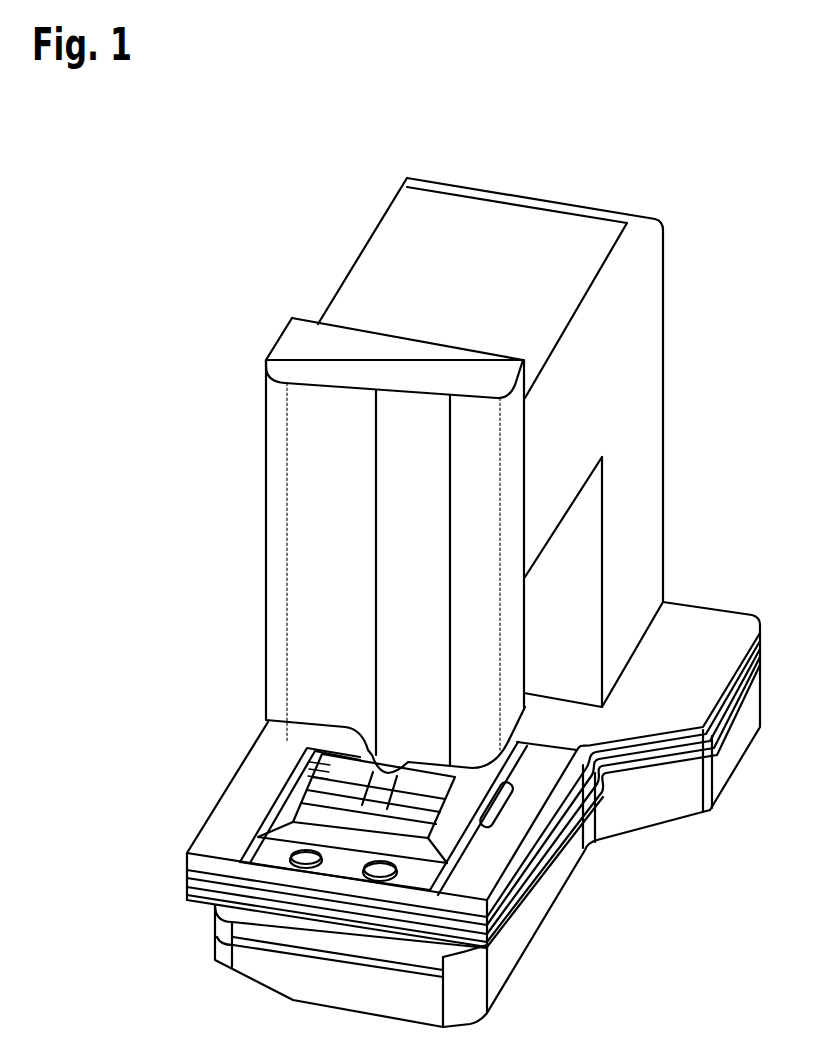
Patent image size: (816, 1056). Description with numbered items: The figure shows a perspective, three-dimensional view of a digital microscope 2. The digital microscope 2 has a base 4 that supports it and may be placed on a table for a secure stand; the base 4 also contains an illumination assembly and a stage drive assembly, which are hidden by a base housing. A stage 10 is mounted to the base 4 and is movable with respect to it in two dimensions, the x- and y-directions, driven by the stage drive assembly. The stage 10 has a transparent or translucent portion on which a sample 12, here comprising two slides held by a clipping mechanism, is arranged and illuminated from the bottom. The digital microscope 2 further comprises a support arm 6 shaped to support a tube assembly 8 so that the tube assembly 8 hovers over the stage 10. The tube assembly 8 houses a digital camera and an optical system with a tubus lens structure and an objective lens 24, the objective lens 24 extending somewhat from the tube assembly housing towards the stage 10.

The digital microscope 2 is at (688, 152).
The base 4 is at (649, 812).
The support arm 6 is at (653, 306).
The tube assembly 8 is at (300, 457).
The stage 10 is at (228, 809).
The sample 12 is at (290, 776).
The objective lens 24 is at (268, 721).